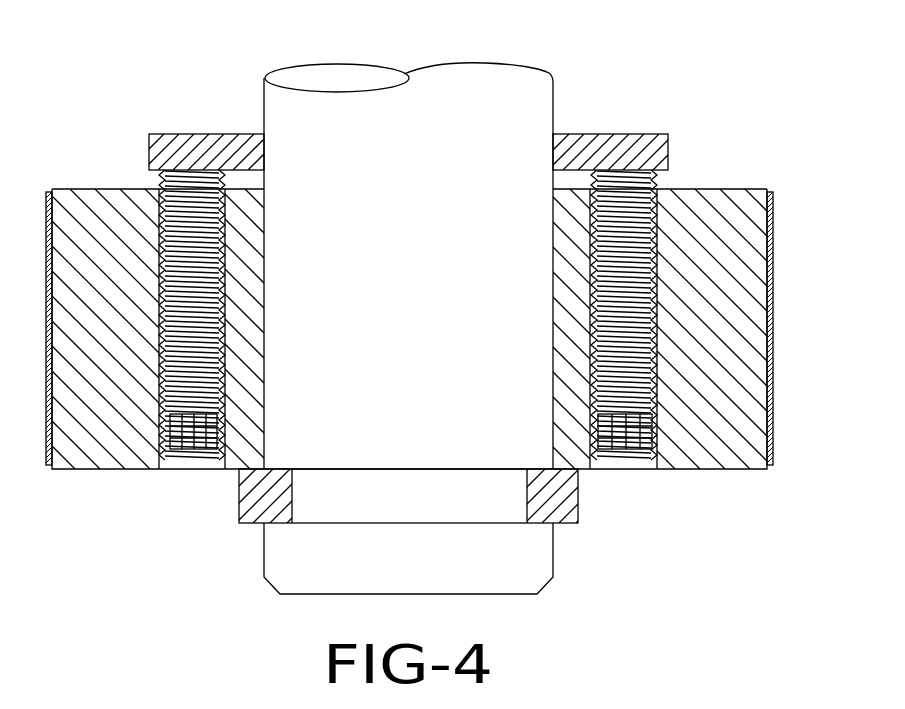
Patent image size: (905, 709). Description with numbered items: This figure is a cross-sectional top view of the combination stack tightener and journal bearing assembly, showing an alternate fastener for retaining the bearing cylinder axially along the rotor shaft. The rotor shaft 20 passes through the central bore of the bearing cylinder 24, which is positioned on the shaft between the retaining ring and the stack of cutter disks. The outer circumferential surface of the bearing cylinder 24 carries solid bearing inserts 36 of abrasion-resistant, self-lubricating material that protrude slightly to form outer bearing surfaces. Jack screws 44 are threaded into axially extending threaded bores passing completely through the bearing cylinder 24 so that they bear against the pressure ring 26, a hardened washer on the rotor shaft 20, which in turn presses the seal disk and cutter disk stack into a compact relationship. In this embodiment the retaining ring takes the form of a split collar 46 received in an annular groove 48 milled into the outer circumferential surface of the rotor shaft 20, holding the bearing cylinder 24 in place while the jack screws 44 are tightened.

The rotor shaft 20 is at (480, 80).
The bearing cylinder 24 is at (720, 215).
The pressure ring 26 is at (193, 142).
The solid bearing insert 36 is at (773, 318).
The jack screw 44 is at (193, 450).
The split collar 46 is at (245, 505).
The annular groove 48 is at (418, 470).